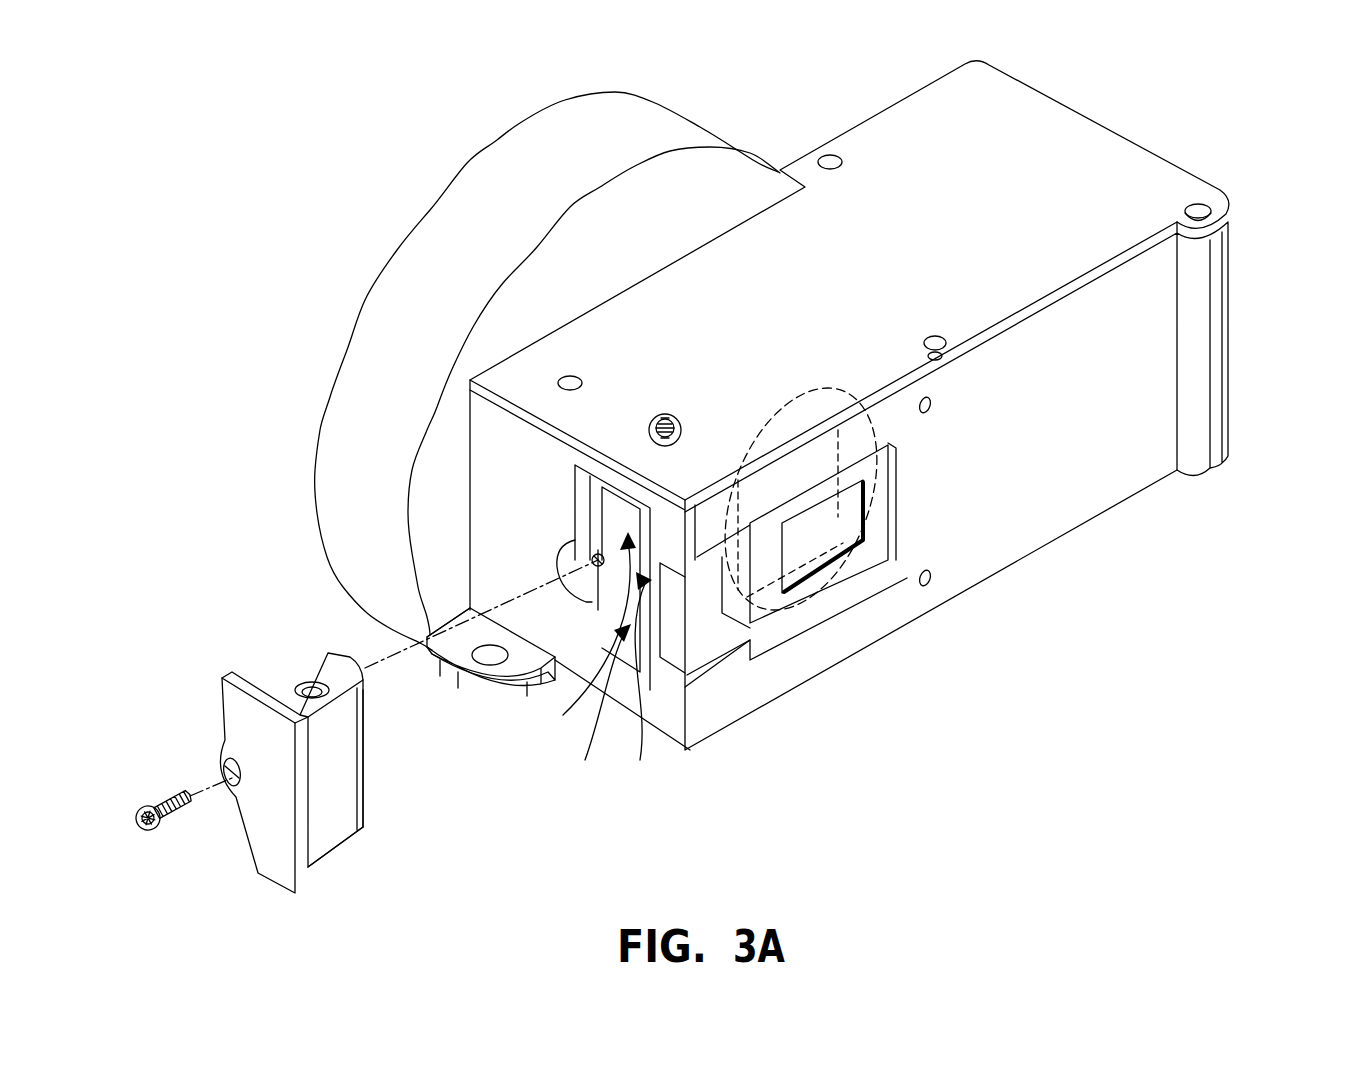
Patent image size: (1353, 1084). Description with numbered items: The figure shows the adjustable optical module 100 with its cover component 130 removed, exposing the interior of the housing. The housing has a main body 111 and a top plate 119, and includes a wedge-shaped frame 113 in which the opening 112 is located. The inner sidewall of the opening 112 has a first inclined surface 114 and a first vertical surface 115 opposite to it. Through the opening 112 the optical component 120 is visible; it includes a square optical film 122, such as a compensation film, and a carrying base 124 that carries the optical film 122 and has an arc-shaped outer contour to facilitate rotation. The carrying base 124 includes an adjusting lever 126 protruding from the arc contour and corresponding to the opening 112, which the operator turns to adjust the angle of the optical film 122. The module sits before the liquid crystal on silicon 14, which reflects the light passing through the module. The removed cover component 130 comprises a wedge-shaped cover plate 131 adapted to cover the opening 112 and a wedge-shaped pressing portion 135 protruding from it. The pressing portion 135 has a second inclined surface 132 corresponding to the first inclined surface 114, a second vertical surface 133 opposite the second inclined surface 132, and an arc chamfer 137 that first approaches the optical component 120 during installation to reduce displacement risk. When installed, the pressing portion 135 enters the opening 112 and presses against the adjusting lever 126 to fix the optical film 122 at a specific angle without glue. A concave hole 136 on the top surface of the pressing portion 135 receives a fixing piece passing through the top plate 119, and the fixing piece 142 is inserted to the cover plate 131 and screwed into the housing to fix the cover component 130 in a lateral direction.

The adjustable optical module 100 is at (1158, 88).
The top plate 119 is at (1157, 185).
The main body 111 is at (1125, 498).
The wedge-shaped frame 113 is at (583, 497).
The first inclined surface 114 is at (586, 643).
The opening 112 is at (598, 710).
The first vertical surface 115 is at (641, 684).
The liquid crystal on silicon 14 is at (865, 565).
The optical component 120 is at (797, 640).
The optical film 122 is at (828, 560).
The carrying base 124 is at (775, 600).
The adjusting lever 126 is at (690, 628).
The cover component 130 is at (314, 761).
The cover plate 131 is at (260, 850).
The second inclined surface 132 is at (268, 682).
The second vertical surface 133 is at (329, 786).
The pressing portion 135 is at (345, 790).
The concave hole 136 is at (313, 676).
The arc chamfer 137 is at (362, 750).
The fixing piece 142 is at (158, 803).